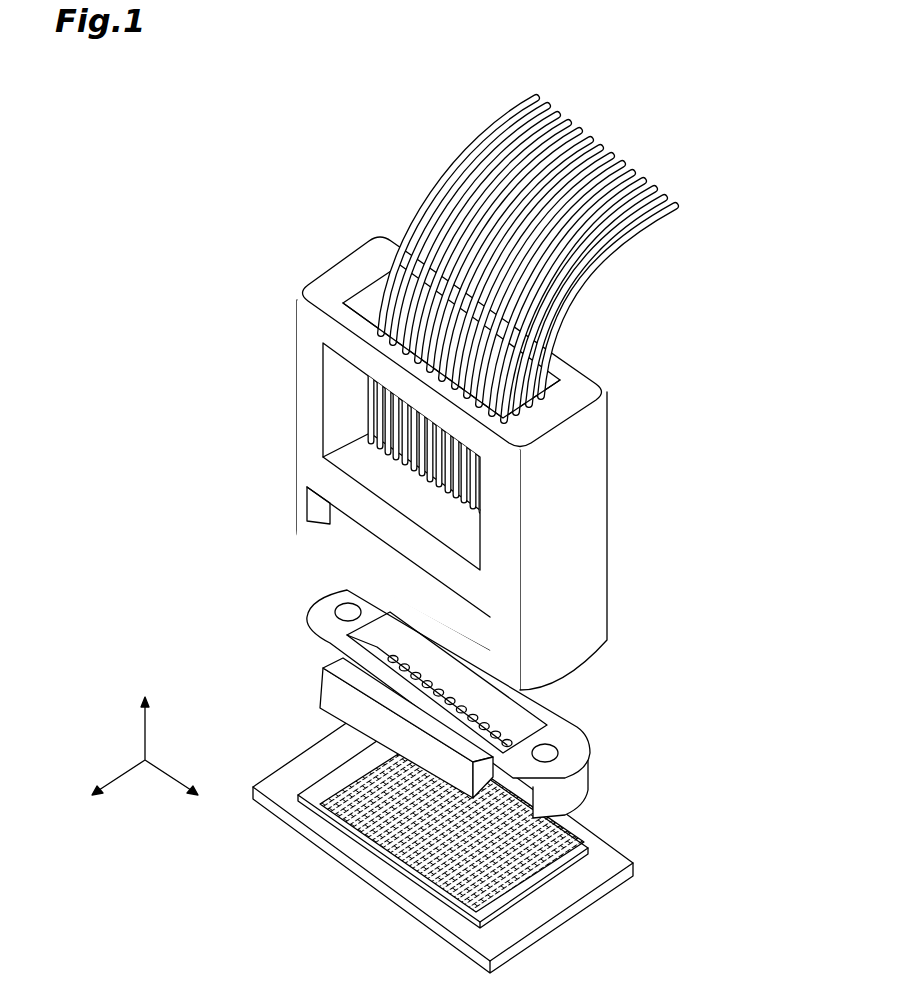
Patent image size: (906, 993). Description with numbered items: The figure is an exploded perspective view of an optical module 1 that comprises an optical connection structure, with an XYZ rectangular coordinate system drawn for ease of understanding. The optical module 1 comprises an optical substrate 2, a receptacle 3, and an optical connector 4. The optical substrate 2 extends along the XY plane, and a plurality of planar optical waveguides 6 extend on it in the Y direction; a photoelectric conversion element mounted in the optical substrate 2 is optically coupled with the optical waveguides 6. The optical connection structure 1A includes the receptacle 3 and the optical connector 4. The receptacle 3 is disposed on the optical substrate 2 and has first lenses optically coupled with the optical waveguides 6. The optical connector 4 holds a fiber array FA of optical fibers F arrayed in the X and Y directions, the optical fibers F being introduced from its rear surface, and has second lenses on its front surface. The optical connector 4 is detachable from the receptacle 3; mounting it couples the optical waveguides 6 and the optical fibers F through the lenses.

The optical module 1 is at (733, 62).
The optical connection structure 1A is at (514, 527).
The optical substrate 2 is at (637, 868).
The receptacle 3 is at (600, 768).
The optical connector 4 is at (486, 463).
The planar optical waveguide 6 is at (413, 882).
The optical fiber F is at (624, 301).
The fiber array FA is at (544, 248).